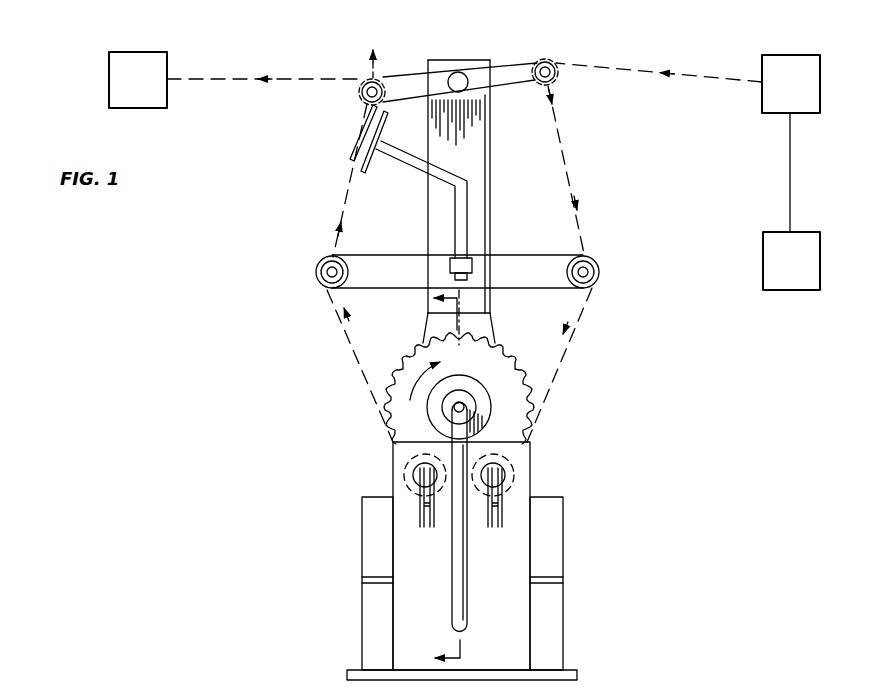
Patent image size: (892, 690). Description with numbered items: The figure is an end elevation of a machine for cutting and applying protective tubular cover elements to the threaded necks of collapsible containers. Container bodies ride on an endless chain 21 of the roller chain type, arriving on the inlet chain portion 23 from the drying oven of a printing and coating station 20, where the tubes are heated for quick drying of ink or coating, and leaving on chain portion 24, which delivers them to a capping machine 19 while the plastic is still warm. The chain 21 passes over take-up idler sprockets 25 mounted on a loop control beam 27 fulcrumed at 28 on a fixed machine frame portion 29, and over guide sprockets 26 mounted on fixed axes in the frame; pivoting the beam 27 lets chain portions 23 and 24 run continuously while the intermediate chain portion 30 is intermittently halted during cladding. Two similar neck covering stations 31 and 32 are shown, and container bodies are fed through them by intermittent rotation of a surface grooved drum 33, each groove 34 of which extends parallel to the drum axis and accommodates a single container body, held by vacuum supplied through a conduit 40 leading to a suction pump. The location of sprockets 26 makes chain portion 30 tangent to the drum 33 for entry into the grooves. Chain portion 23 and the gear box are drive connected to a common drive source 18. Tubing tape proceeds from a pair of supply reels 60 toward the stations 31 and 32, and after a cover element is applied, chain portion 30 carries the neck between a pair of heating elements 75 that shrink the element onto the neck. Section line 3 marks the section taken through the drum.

The section line 3- 3 is at (435, 479).
The common drive source 18 is at (763, 255).
The capping machine 19 is at (121, 52).
The printing and coating station 20 is at (795, 60).
The endless chain 21 is at (604, 70).
The inlet chain portion 23 is at (678, 62).
The chain portion 24 is at (228, 70).
The take-up idler sprockets 25 is at (362, 84).
The guide sprockets 26 is at (328, 258).
The loop control beam 27 is at (503, 75).
The fulcrum 28 is at (457, 72).
The fixed machine frame portion 29 is at (470, 152).
The intermediate chain portion 30 is at (576, 336).
The container neck covering station 31 is at (517, 473).
The container neck covering station 32 is at (402, 477).
The drum 33 is at (518, 407).
The groove 34 is at (407, 353).
The conduit 40 is at (461, 573).
The supply reels 60 is at (417, 517).
The heating elements 75 is at (352, 146).